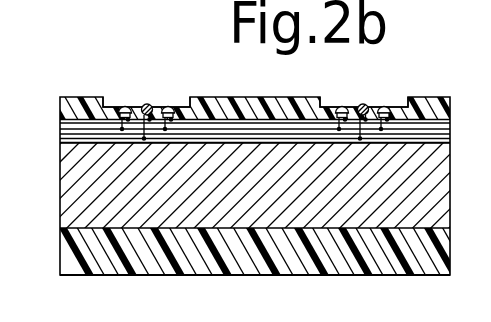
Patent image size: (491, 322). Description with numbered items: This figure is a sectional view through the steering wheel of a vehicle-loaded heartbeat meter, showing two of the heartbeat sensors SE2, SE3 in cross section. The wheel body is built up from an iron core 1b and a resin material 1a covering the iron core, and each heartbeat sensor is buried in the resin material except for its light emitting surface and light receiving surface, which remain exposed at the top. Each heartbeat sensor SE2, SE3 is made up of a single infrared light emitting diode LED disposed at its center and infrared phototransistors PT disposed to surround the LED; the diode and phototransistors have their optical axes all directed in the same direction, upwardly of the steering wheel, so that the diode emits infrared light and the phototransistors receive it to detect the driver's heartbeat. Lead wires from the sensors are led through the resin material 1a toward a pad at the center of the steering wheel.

The resin material 1a is at (82, 251).
The iron core 1b is at (72, 197).
The heartbeat sensor SE2 is at (134, 95).
The heartbeat sensor SE3 is at (367, 95).
The infrared light emitting diode LED is at (146, 104).
The infrared phototransistor PT is at (172, 104).